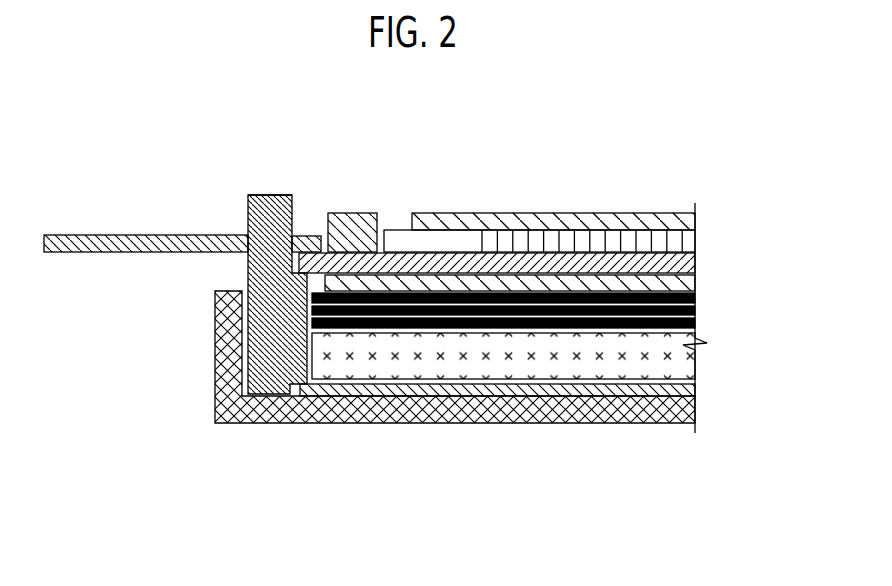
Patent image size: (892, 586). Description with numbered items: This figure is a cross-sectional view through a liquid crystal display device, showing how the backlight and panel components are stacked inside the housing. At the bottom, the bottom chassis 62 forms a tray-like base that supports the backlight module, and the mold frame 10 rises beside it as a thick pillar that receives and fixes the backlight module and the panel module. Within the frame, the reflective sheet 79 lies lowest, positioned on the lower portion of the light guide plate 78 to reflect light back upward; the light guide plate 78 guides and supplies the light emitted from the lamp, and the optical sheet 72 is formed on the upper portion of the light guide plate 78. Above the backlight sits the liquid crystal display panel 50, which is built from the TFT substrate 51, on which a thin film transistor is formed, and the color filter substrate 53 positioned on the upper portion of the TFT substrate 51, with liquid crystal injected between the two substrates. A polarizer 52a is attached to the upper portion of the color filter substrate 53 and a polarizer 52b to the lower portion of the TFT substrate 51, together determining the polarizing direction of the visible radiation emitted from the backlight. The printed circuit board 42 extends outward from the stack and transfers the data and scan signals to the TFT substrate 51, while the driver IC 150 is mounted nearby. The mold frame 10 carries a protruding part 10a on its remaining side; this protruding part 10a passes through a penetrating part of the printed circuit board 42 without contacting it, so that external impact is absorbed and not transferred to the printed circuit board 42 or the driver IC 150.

The mold frame 10 is at (268, 358).
The protruding part 10a is at (248, 197).
The printed circuit board 42 is at (108, 245).
The driver IC 150 is at (353, 218).
The liquid crystal display panel 50 is at (553, 242).
The polarizer 52a is at (688, 221).
The color filter substrate 53 is at (688, 244).
The TFT substrate 51 is at (690, 263).
The polarizer 52b is at (548, 280).
The optical sheet 72 is at (702, 293).
The light guide plate 78 is at (688, 358).
The reflective sheet 79 is at (688, 390).
The bottom chassis 62 is at (690, 410).